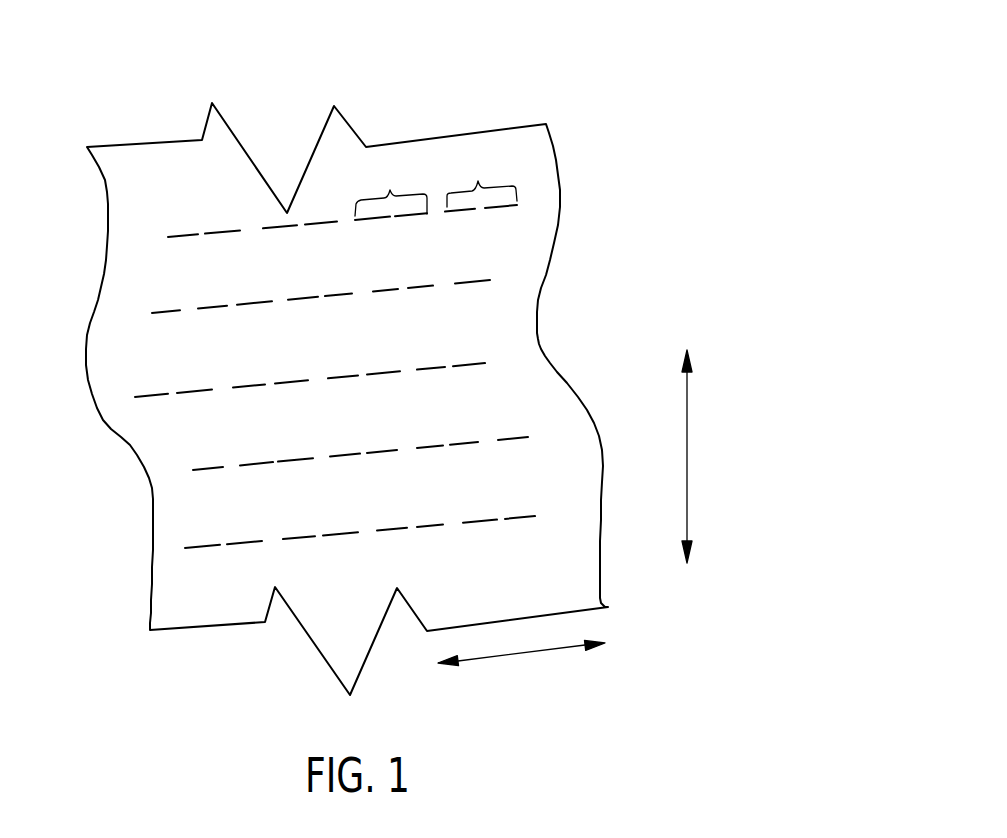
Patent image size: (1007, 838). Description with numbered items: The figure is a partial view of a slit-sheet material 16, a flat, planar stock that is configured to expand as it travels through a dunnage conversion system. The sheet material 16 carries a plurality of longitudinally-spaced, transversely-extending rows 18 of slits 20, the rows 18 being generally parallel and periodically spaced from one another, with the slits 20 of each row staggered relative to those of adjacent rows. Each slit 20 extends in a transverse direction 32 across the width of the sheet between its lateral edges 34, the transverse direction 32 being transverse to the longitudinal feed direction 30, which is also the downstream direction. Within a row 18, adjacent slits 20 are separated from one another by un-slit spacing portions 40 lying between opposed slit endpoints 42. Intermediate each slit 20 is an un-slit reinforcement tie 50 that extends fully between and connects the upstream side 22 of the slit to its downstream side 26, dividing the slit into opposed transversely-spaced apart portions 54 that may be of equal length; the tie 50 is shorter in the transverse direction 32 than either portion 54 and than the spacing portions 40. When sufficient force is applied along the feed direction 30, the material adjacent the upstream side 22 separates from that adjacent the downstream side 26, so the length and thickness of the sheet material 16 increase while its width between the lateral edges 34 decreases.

The slit-sheet material 16 is at (671, 78).
The rows of slits 18 is at (530, 272).
The slits 20 is at (436, 184).
The upstream side 22 is at (201, 207).
The downstream side 26 is at (183, 255).
The longitudinal feed direction 30 is at (688, 452).
The transverse direction 32 is at (523, 657).
The lateral edges 34 is at (108, 217).
The un-slit spacing portions 40 is at (317, 380).
The slit endpoints 42 is at (463, 522).
The un-slit reinforcement tie 50 is at (232, 308).
The transversely-spaced apart portions 54 is at (347, 295).